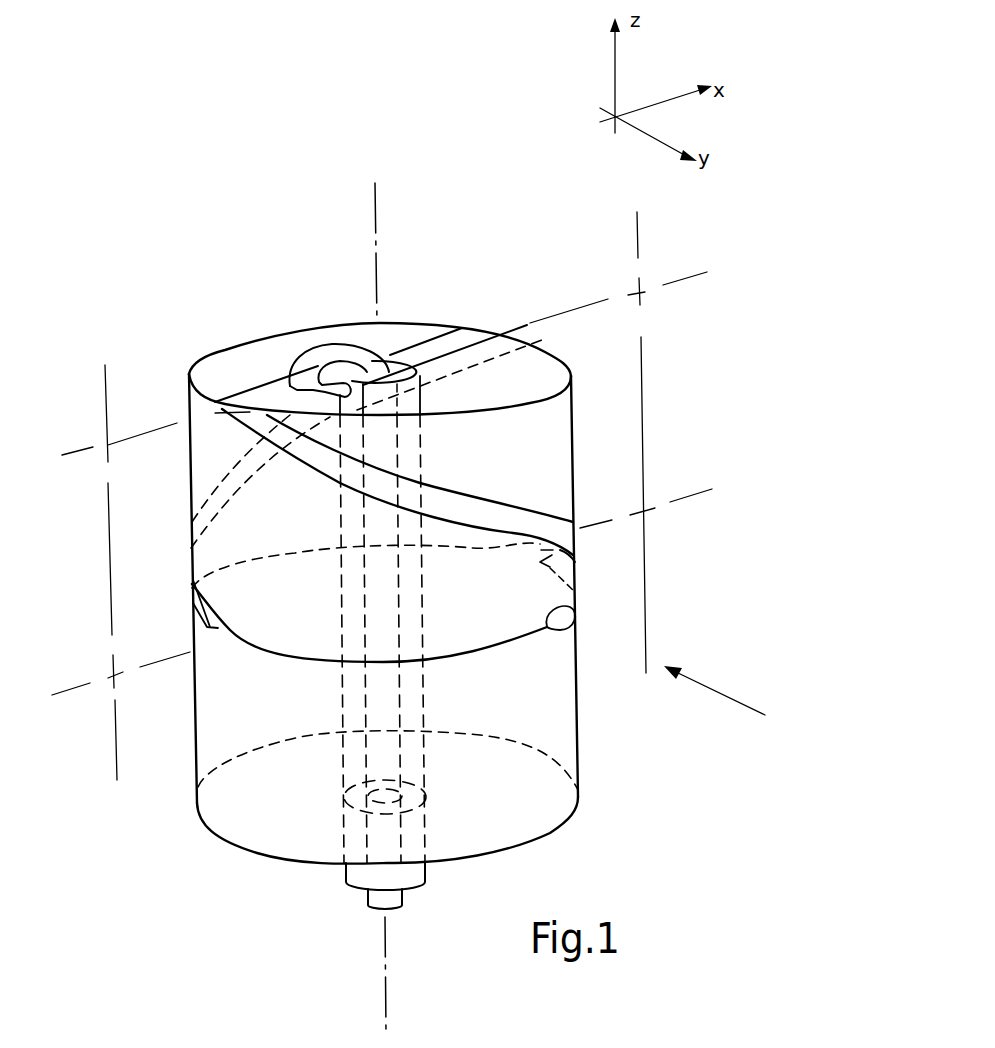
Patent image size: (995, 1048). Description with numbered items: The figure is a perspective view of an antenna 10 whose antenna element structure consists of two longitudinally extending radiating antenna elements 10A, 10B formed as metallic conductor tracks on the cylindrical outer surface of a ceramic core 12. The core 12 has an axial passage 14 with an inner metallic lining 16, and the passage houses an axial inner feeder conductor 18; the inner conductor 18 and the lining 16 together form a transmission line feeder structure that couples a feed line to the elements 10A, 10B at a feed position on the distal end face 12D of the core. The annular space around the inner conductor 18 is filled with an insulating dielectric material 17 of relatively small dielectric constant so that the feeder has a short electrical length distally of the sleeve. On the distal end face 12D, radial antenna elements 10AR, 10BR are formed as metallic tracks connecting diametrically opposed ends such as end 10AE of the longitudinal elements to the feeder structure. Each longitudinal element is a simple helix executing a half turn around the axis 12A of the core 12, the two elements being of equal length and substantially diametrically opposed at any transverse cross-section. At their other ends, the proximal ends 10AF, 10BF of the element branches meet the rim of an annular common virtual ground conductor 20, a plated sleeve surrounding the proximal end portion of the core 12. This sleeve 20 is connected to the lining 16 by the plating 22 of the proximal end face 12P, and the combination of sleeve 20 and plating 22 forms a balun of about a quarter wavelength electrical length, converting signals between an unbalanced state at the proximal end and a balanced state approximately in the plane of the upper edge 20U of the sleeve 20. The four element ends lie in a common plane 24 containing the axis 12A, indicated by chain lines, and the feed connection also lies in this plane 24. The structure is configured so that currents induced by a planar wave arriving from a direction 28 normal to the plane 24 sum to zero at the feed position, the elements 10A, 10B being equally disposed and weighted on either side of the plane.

The antenna 10 is at (128, 218).
The ceramic core 12 is at (290, 330).
The axis of the core 12A is at (387, 972).
The distal end face 12D is at (410, 357).
The proximal end face 12P is at (290, 887).
The axial passage 14 is at (390, 340).
The inner metallic lining 16 is at (420, 468).
The insulating dielectric material 17 is at (447, 357).
The inner feeder conductor 18 is at (337, 357).
The common virtual ground conductor 20 is at (563, 742).
The upper edge of the sleeve 20U is at (577, 608).
The plating of the proximal end face 22 is at (442, 837).
The common plane 24 is at (90, 683).
The direction of incident wave 28 is at (719, 692).
The longitudinally extending radiating antenna element 10A is at (510, 518).
The end of antenna element 10AE is at (215, 413).
The proximal end of antenna element branch 10AF is at (573, 568).
The radial antenna element 10AR is at (248, 397).
The longitudinally extending radiating antenna element 10B is at (210, 498).
The proximal end of antenna element branch 10BF is at (213, 627).
The radial antenna element 10BR is at (493, 337).